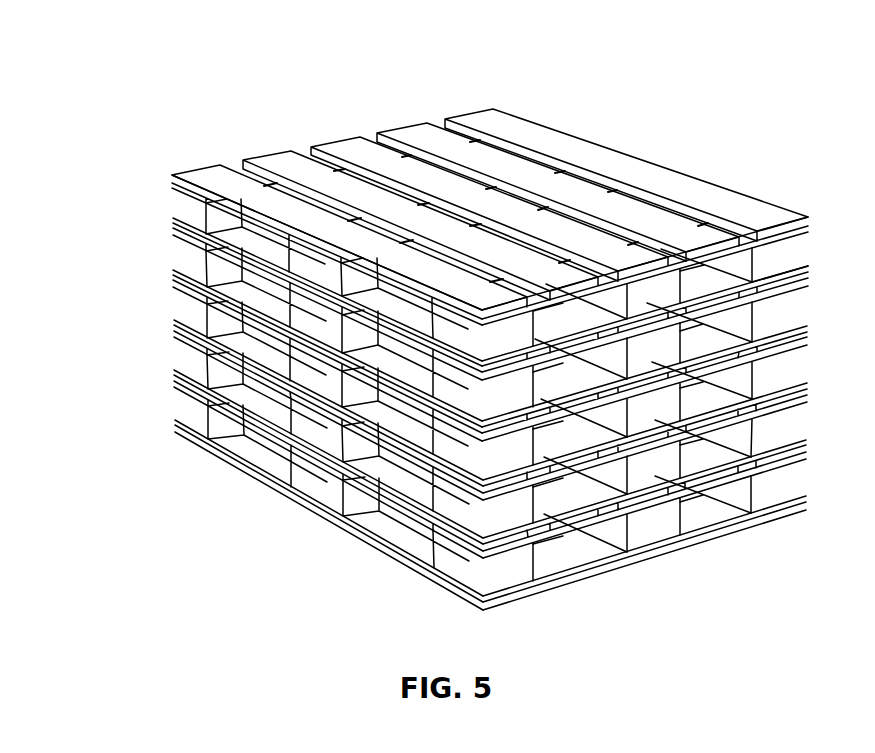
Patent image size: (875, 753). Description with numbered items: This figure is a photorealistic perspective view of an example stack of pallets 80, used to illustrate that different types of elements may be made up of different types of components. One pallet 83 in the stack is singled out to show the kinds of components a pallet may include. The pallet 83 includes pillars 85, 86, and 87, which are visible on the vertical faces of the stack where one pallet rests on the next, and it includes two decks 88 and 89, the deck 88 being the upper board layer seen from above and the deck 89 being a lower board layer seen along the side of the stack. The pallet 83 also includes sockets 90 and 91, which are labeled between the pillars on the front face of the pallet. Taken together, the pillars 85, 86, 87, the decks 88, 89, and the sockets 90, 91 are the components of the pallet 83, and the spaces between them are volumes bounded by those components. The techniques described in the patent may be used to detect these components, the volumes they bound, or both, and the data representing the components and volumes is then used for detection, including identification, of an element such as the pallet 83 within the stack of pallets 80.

The stacked pallet assembly 80 is at (180, 95).
The pallet 83 is at (680, 172).
The deck 88 is at (728, 216).
The pillar 85 is at (797, 254).
The pillar 86 is at (692, 304).
The socket 90 is at (750, 287).
The pillar 87 is at (536, 347).
The socket 91 is at (607, 323).
The deck 89 is at (243, 244).